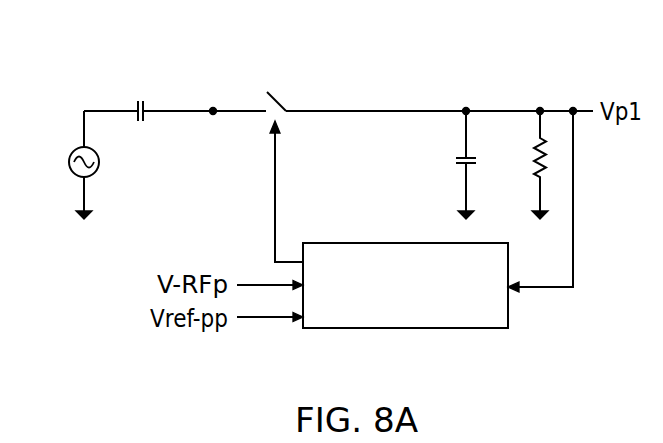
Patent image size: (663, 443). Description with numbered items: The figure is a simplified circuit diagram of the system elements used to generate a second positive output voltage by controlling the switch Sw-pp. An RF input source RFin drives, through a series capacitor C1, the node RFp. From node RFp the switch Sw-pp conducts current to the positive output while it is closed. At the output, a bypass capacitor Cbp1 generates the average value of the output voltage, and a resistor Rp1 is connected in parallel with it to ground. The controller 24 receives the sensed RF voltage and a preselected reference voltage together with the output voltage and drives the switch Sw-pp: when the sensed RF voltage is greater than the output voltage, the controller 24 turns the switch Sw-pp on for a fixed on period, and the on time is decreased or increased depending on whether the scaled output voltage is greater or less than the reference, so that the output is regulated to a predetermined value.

The controller 24 is at (421, 219).
The capacitor C1 is at (137, 103).
The bypass capacitor Cbp1 is at (457, 161).
The resistor Rp1 is at (535, 148).
The switch Sw-pp is at (303, 87).
The node RFp is at (213, 100).
The RF input RFin is at (53, 165).